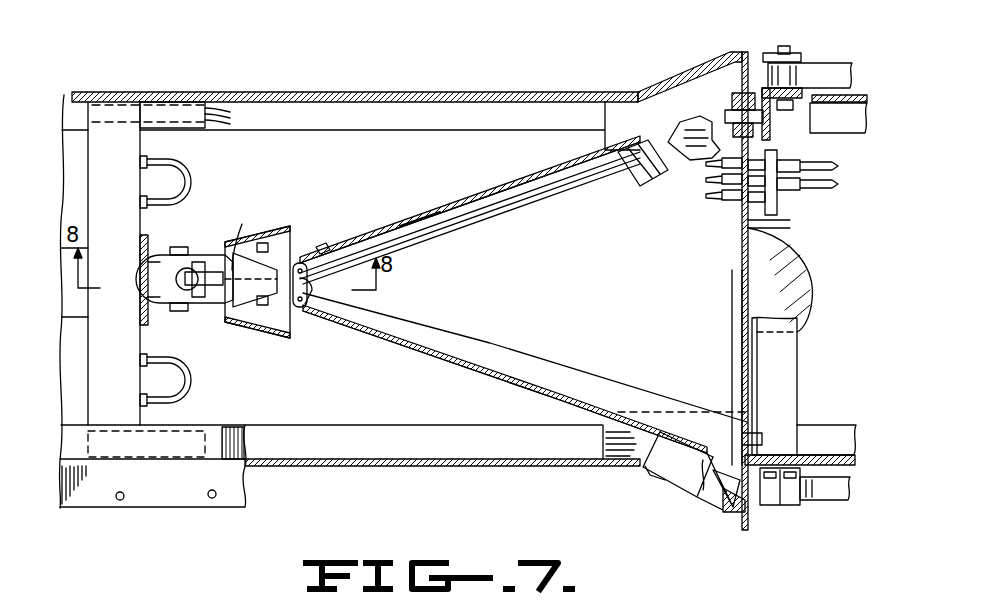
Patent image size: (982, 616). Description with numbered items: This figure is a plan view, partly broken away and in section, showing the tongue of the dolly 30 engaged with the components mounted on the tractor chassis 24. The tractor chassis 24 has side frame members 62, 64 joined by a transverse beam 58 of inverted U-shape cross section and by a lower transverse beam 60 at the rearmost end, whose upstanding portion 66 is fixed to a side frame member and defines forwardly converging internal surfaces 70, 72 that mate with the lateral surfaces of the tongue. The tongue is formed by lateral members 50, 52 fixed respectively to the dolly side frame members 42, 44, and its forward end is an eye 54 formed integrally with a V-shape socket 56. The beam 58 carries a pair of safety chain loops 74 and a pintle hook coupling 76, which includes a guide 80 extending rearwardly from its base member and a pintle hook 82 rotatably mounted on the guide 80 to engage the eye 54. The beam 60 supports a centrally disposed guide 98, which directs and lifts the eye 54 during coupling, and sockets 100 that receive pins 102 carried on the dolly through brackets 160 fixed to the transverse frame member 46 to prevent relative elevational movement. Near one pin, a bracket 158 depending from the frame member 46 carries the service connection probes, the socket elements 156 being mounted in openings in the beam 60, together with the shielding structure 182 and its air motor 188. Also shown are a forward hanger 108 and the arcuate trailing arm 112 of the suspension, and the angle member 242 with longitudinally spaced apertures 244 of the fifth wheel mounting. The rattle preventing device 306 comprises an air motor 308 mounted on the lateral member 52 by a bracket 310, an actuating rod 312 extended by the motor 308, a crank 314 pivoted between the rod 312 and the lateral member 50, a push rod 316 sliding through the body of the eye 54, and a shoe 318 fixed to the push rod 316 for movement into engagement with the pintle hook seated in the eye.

The chassis 24 is at (87, 91).
The transverse beam 58 is at (105, 130).
The side frame member 64 is at (320, 95).
The safety chain loops 74 is at (184, 172).
The pintle hook 82 is at (183, 290).
The eye 54 is at (220, 302).
The shoe 318 is at (212, 262).
The push rod 316 is at (252, 233).
The guide 80 is at (282, 336).
The crank 314 is at (303, 318).
The lateral member 52 is at (490, 185).
The actuating rod 312 is at (464, 230).
The rattle preventing device 306 is at (423, 222).
The V-shape socket 56 is at (320, 243).
The pintle hook coupling 76 is at (263, 204).
The lateral member 50 is at (452, 364).
The upstanding portion 66 is at (718, 508).
The forwardly converging internal surface 70 is at (640, 466).
The side frame member 62 is at (380, 467).
The apertures 244 is at (122, 500).
The angle member 242 is at (210, 500).
The forwardly converging internal surface 72 is at (692, 98).
The pins 102 is at (752, 68).
The bracket 310 is at (638, 184).
The air motor 308 is at (692, 162).
The sockets 100 is at (740, 110).
The bracket 160 is at (770, 122).
The forward hanger 108 is at (802, 58).
The trailing arm 112 is at (832, 70).
The side frame member 44 is at (838, 130).
The socket elements 156 is at (740, 209).
The bracket 158 is at (780, 215).
The air motor 188 is at (816, 192).
The shielding structure 182 is at (778, 226).
The transverse beam 60 is at (740, 236).
The guide 98 is at (812, 300).
The transverse frame member 46 is at (796, 378).
The side frame member 42 is at (828, 450).
The dolly 30 is at (799, 510).